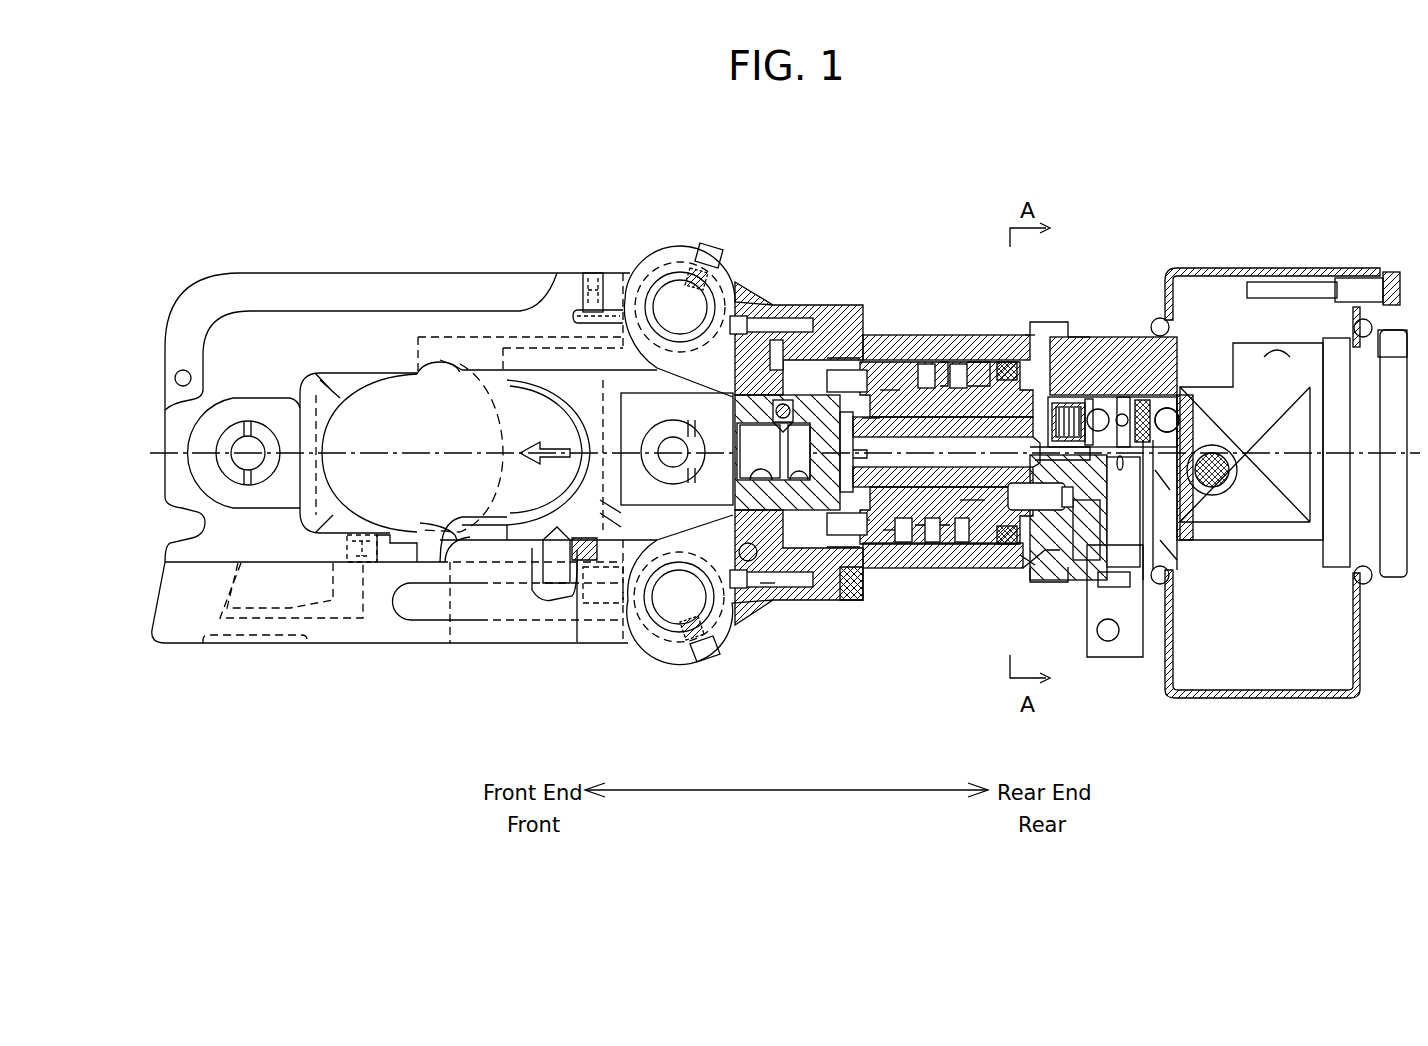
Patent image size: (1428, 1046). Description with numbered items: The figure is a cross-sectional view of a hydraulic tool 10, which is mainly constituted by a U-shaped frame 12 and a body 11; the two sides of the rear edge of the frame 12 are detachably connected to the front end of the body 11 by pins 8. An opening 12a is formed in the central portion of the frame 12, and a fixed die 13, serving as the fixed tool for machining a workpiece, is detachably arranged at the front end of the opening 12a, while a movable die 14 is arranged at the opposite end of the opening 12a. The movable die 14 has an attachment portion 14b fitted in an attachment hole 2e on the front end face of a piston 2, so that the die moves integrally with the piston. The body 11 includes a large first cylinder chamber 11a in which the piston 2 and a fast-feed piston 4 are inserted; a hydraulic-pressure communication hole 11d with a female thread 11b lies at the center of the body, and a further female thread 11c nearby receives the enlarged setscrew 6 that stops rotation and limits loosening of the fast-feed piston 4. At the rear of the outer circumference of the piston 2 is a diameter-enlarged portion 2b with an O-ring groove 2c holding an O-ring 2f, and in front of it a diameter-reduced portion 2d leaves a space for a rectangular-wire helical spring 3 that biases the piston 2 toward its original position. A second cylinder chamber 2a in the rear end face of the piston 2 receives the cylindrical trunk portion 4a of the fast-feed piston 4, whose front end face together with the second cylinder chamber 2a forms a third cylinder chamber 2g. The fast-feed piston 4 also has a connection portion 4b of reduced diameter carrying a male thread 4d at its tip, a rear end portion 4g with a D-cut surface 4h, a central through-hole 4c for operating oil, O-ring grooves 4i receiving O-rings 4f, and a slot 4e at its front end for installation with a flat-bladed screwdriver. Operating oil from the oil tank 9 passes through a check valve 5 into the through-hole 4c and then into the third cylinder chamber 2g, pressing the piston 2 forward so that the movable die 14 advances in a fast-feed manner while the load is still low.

The piston 2 is at (957, 500).
The second cylinder chamber 2a is at (978, 398).
The diameter-enlarged portion 2b is at (990, 363).
The O-ring groove 2c is at (1040, 332).
The diameter-reduced portion 2d is at (888, 413).
The attachment hole 2e is at (764, 585).
The O-ring 2f is at (1032, 334).
The third cylinder chamber 2g is at (830, 566).
The rectangular-wire helical spring 3 is at (957, 358).
The fast-feed piston 4 is at (905, 400).
The trunk portion 4a is at (920, 405).
The connection portion 4b is at (1086, 503).
The through-hole 4c is at (930, 520).
The male thread 4d is at (1152, 560).
The slot 4e is at (897, 530).
The O-ring 4f is at (872, 417).
The rear end portion 4g is at (1080, 340).
The D-cut surface 4h is at (960, 503).
The O-ring groove 4i is at (867, 518).
The check valve 5 is at (1165, 418).
The setscrew 6 is at (1050, 548).
The pin 8 is at (680, 300).
The oil tank 9 is at (1207, 305).
The hydraulic tool 10 is at (1212, 146).
The body 11 is at (1115, 345).
The first cylinder chamber 11a is at (837, 367).
The female thread 11b is at (1160, 542).
The female thread 11c is at (1024, 560).
The hydraulic-pressure communication hole 11d is at (1160, 475).
The frame 12 is at (230, 285).
The opening 12a is at (392, 412).
The fixed die 13 is at (327, 385).
The movable die 14 is at (573, 388).
The attachment portion 14b is at (750, 430).